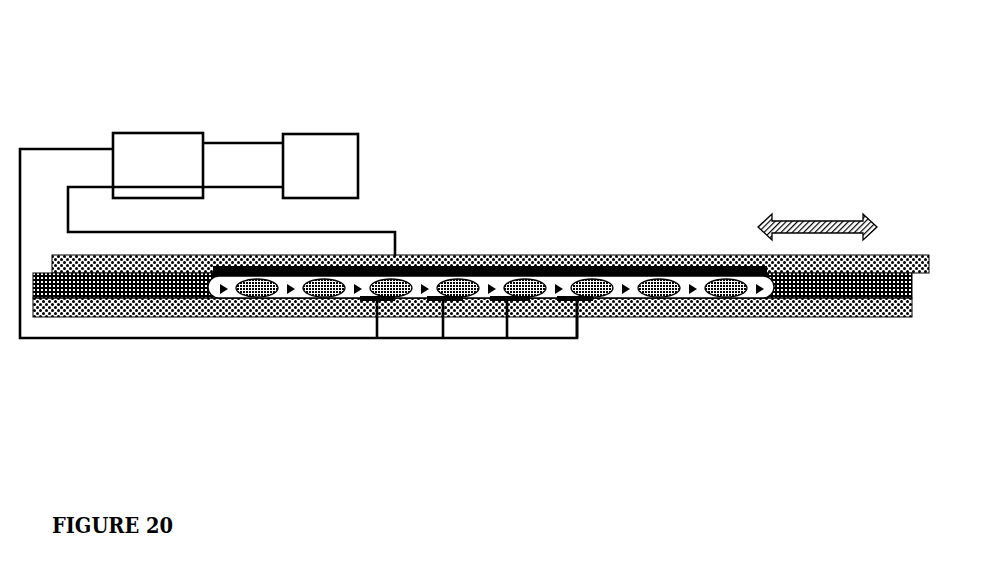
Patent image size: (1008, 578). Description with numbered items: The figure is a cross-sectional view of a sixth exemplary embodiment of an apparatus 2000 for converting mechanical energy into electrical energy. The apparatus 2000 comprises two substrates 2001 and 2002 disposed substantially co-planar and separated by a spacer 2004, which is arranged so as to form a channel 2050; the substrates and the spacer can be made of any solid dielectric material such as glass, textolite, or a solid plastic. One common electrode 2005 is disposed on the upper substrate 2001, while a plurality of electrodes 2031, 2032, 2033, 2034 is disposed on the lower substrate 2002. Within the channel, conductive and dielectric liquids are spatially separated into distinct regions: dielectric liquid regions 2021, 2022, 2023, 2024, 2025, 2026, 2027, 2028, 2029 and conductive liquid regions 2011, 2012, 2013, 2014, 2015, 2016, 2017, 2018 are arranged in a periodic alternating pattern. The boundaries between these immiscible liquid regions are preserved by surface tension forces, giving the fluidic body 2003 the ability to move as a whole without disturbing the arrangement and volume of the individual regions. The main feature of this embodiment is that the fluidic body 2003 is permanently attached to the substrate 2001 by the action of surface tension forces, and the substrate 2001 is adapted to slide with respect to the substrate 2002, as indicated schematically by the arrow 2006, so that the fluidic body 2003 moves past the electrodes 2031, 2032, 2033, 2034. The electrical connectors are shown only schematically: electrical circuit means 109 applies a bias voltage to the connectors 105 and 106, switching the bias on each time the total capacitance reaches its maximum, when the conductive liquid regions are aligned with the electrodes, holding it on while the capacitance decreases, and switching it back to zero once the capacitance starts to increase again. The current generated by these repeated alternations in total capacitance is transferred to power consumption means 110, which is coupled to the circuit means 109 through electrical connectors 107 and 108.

The connector 105 is at (355, 227).
The connector 106 is at (47, 137).
The electrical connector 107 is at (230, 140).
The electrical connector 108 is at (230, 178).
The electrical circuit means 109 is at (183, 129).
The power consumption means 110 is at (365, 127).
The apparatus 2000 is at (828, 87).
The substrate 2001 is at (585, 252).
The substrate 2002 is at (212, 322).
The fluidic body 2003 is at (207, 292).
The spacer 2004 is at (35, 282).
The common electrode 2005 is at (470, 266).
The arrow 2006 is at (812, 213).
The conductive liquid region 2011 is at (258, 293).
The conductive liquid region 2012 is at (325, 293).
The conductive liquid region 2013 is at (392, 293).
The conductive liquid region 2014 is at (459, 293).
The conductive liquid region 2015 is at (526, 293).
The conductive liquid region 2016 is at (593, 293).
The conductive liquid region 2017 is at (660, 293).
The conductive liquid region 2018 is at (727, 293).
The dielectric liquid region 2021 is at (224, 294).
The dielectric liquid region 2022 is at (291, 294).
The dielectric liquid region 2023 is at (358, 294).
The dielectric liquid region 2024 is at (425, 294).
The dielectric liquid region 2025 is at (492, 294).
The dielectric liquid region 2026 is at (559, 294).
The dielectric liquid region 2027 is at (626, 294).
The dielectric liquid region 2028 is at (693, 294).
The dielectric liquid region 2029 is at (762, 294).
The electrode 2031 is at (379, 300).
The electrode 2032 is at (444, 300).
The electrode 2033 is at (509, 300).
The electrode 2034 is at (579, 300).
The channel 2050 is at (848, 285).